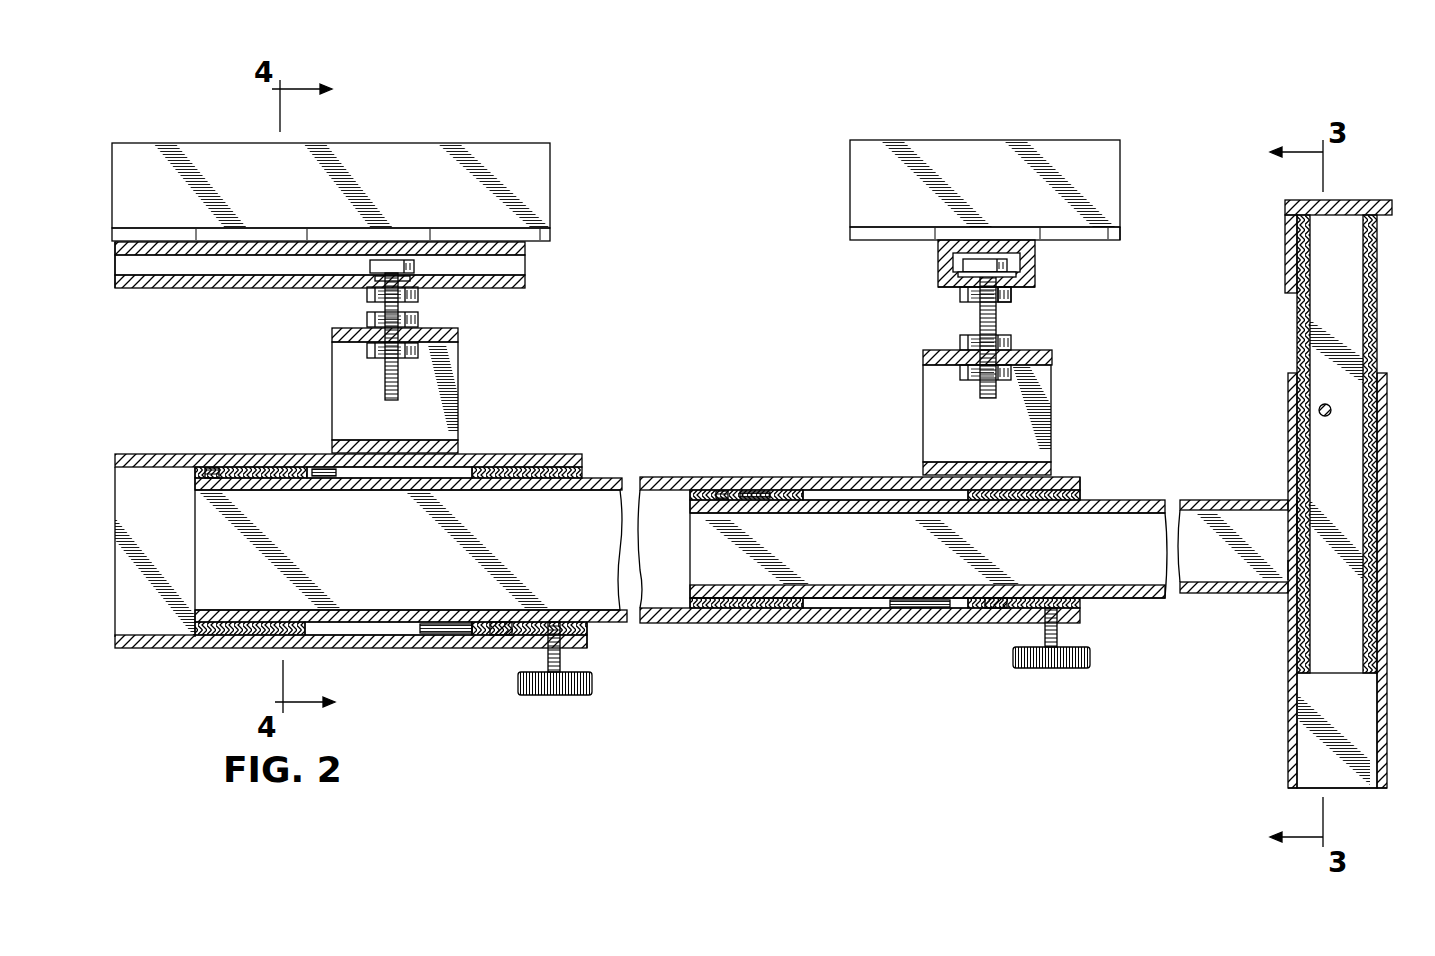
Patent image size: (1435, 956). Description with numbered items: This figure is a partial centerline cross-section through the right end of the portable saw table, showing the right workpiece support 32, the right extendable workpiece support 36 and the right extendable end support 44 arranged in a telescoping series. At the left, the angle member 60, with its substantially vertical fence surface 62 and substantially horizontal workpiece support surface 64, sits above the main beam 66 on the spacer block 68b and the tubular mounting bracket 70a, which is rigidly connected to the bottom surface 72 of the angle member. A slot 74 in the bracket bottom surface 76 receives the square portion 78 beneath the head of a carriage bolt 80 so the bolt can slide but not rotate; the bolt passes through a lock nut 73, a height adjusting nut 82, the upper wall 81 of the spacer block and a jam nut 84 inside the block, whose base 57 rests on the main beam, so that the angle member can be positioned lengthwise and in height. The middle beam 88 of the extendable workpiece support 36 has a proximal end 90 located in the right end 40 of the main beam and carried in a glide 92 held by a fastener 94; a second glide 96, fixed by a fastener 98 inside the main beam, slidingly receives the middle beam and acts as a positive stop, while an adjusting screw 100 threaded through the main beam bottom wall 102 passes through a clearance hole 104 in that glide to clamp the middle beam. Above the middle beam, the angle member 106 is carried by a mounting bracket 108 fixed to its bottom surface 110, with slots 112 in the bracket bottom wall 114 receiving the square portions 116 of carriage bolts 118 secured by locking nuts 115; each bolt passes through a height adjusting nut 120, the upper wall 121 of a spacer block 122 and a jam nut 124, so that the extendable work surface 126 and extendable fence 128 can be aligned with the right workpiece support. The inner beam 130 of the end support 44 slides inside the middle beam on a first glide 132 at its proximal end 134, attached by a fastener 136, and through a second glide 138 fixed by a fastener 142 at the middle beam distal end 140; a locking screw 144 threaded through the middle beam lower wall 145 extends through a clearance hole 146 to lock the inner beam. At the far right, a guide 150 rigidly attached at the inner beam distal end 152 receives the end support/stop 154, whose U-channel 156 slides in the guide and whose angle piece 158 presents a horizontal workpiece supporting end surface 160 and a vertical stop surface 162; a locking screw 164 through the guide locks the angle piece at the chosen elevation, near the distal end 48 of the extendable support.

The right workpiece support 32 is at (216, 95).
The right extendable workpiece support 36 is at (817, 768).
The right end of the main beam 40 is at (582, 463).
The right extendable end support 44 is at (1284, 465).
The distal end of the right extendable workpiece support 48 is at (1290, 570).
The mounting block base 57 is at (298, 453).
The angle member 60 is at (189, 140).
The substantially vertical surface 62 is at (375, 152).
The adjustable workpiece support surface 64 is at (185, 228).
The main beam 66 is at (160, 446).
The spacer block 68b is at (331, 395).
The mounting bracket 70a is at (190, 292).
The bottom surface of the angle member 72 is at (535, 243).
The lock nut 73 is at (367, 295).
The slot 74 is at (512, 278).
The bottom surface of the mounting bracket 76 is at (268, 286).
The square portion 78 is at (402, 282).
The carriage bolt 80 is at (393, 265).
The upper wall of the spacer block 81 is at (448, 334).
The height adjusting nut 82 is at (367, 320).
The jam nut 84 is at (367, 350).
The middle beam 88 is at (672, 472).
The proximal end of the middle beam 90 is at (195, 618).
The glide 92 is at (195, 474).
The fastener 94 is at (226, 468).
The second glide 96 is at (588, 628).
The fastener 98 is at (497, 637).
The adjusting screw 100 is at (552, 696).
The bottom wall of the main beam 102 is at (395, 649).
The clearance hole 104 is at (536, 612).
The angle member 106 is at (914, 138).
The mounting bracket 108 is at (1036, 266).
The bottom surface of the angle member 110 is at (1096, 242).
The slot 112 is at (953, 274).
The bottom wall of the mounting bracket 114 is at (942, 284).
The locking nut 115 is at (960, 296).
The square portion 116 is at (1012, 290).
The carriage bolt 118 is at (986, 264).
The height adjusting nut 120 is at (960, 344).
The upper wall of the spacer block 121 is at (925, 357).
The spacer block 122 is at (922, 426).
The jam nut 124 is at (960, 372).
The extendable work surface 126 is at (903, 226).
The extendable fence 128 is at (977, 152).
The inner beam 130 is at (1218, 498).
The first glide 132 is at (781, 489).
The proximal end of the inner beam 134 is at (688, 545).
The fastener 136 is at (716, 490).
The second glide 138 is at (1086, 496).
The distal end of the middle beam 140 is at (1081, 488).
The fastener 142 is at (995, 610).
The locking screw 144 is at (1052, 670).
The middle beam lower wall 145 is at (881, 625).
The clearance hole 146 is at (1050, 587).
The guide 150 is at (1288, 706).
The distal end of the inner beam 152 is at (1297, 526).
The end support/stop 154 is at (1272, 330).
The U-channel 156 is at (1296, 350).
The angle piece 158 is at (1280, 238).
The workpiece supporting end surface 160 is at (1306, 199).
The stop surface 162 is at (1285, 265).
The locking screw 164 is at (1318, 409).